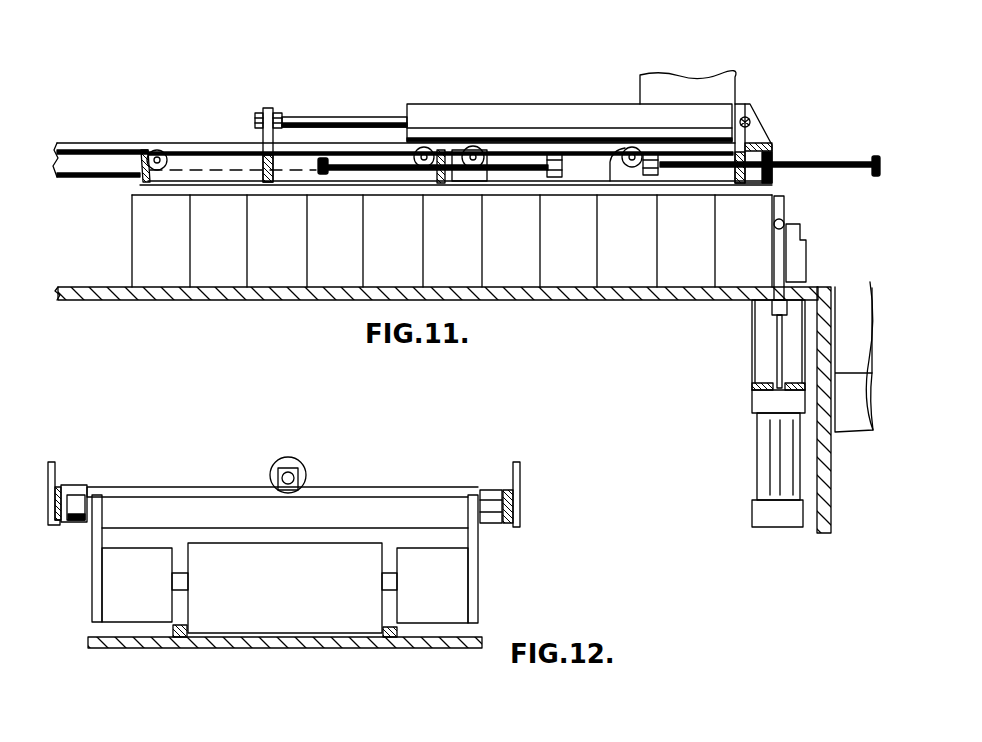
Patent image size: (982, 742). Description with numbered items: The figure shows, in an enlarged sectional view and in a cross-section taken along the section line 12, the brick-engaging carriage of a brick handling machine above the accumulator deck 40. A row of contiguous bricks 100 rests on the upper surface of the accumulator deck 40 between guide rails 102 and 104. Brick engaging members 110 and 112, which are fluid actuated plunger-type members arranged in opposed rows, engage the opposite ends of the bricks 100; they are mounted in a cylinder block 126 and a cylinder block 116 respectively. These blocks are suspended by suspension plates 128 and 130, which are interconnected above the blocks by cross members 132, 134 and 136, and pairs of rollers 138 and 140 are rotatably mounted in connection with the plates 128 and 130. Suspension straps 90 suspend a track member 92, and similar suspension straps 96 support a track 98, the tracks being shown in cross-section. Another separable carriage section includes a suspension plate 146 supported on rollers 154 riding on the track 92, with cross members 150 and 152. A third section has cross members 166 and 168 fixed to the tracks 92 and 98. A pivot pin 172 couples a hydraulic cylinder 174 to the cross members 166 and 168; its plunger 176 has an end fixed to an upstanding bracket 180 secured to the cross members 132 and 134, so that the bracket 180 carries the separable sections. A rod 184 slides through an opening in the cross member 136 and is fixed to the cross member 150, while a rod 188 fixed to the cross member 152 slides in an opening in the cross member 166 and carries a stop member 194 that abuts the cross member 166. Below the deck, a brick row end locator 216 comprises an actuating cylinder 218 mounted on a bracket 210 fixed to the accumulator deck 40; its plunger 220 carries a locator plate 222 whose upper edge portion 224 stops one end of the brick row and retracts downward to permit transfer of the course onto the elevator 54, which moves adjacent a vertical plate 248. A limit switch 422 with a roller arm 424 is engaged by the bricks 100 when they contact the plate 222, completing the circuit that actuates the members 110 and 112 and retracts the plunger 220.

In FIG. 11, the section line 12— 12 is at (117, 122).
In FIG. 11, the accumulator deck 40 is at (450, 287).
In FIG. 12, the accumulator deck 40 is at (295, 640).
In FIG. 11, the elevator 54 is at (868, 268).
In FIG. 11, the suspension straps 90 is at (698, 80).
In FIG. 12, the suspension straps 90 is at (55, 471).
In FIG. 11, the track member 92 is at (133, 150).
In FIG. 12, the track member 92 is at (80, 525).
In FIG. 12, the suspension straps 96 is at (520, 497).
In FIG. 12, the track 98 is at (495, 525).
In FIG. 12, the bricks 100 is at (260, 596).
In FIG. 12, the guide rail 102 is at (180, 640).
In FIG. 12, the guide rail 104 is at (390, 638).
In FIG. 12, the brick engaging members 110 is at (178, 586).
In FIG. 12, the brick engaging members 112 is at (392, 590).
In FIG. 12, the cylinder block 116 is at (440, 548).
In FIG. 12, the cylinder block 126 is at (157, 548).
In FIG. 12, the suspension plate 128 is at (104, 538).
In FIG. 12, the suspension plate 130 is at (480, 598).
In FIG. 11, the cross member 132 is at (147, 182).
In FIG. 12, the cross member 132 is at (365, 505).
In FIG. 11, the cross member 134 is at (258, 180).
In FIG. 11, the cross member 136 is at (440, 183).
In FIG. 11, the rollers 138 is at (160, 149).
In FIG. 12, the rollers 138 is at (88, 495).
In FIG. 12, the rollers 140 is at (492, 493).
In FIG. 11, the suspension plate 146 is at (510, 155).
In FIG. 11, the cross member 150 is at (554, 152).
In FIG. 11, the cross member 152 is at (637, 150).
In FIG. 11, the rollers 154 is at (485, 174).
In FIG. 11, the cross member 166 is at (733, 178).
In FIG. 12, the cross member 166 is at (312, 486).
In FIG. 11, the cross member 168 is at (771, 187).
In FIG. 11, the pivot pin 172 is at (745, 108).
In FIG. 11, the hydraulic cylinder 174 is at (658, 110).
In FIG. 12, the hydraulic cylinder 174 is at (300, 468).
In FIG. 11, the plunger 176 is at (383, 117).
In FIG. 12, the plunger 176 is at (291, 480).
In FIG. 11, the upstanding bracket 180 is at (268, 108).
In FIG. 11, the rod 184 is at (340, 175).
In FIG. 11, the rod 188 is at (808, 163).
In FIG. 11, the stop member 194 is at (875, 157).
In FIG. 11, the bracket 210 is at (765, 368).
In FIG. 11, the brick row end locator 216 is at (750, 422).
In FIG. 11, the actuating cylinder 218 is at (770, 485).
In FIG. 11, the plunger 220 is at (775, 342).
In FIG. 11, the locator plate 222 is at (772, 270).
In FIG. 11, the upper edge portion 224 is at (757, 135).
In FIG. 11, the vertical plate 248 is at (831, 452).
In FIG. 11, the limit switch 422 is at (808, 252).
In FIG. 11, the roller arm 424 is at (785, 222).